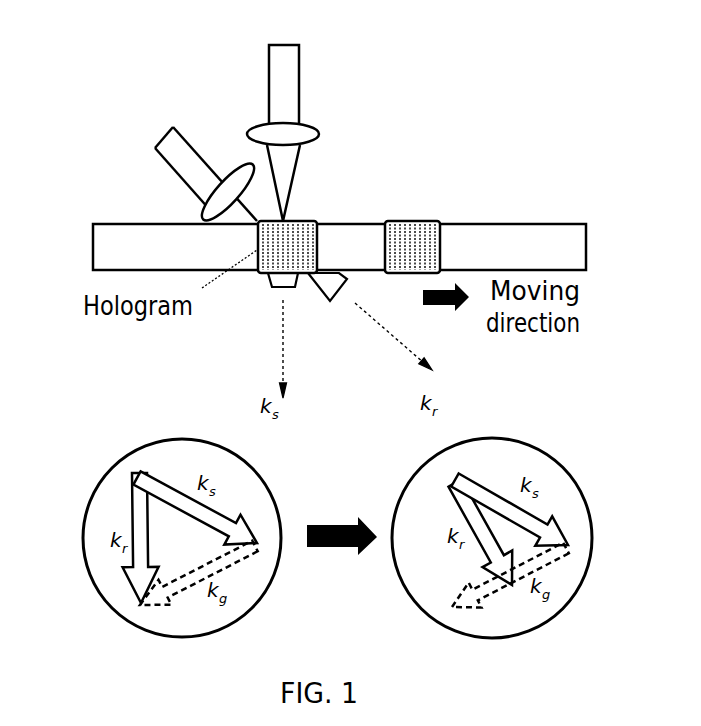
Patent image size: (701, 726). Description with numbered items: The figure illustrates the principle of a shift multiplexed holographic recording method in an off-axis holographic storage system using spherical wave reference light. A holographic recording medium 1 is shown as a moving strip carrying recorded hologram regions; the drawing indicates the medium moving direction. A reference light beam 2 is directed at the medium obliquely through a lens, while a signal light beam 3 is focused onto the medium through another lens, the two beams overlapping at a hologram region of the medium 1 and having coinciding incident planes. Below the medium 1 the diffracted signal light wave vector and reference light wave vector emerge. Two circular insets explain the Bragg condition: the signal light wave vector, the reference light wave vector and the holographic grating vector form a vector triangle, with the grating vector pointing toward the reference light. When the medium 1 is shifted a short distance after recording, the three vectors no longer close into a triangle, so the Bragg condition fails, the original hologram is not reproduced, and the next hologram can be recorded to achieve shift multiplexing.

The holographic recording medium (film) 1 is at (93, 217).
The reference beam 2 is at (158, 124).
The signal beam 3 is at (258, 58).